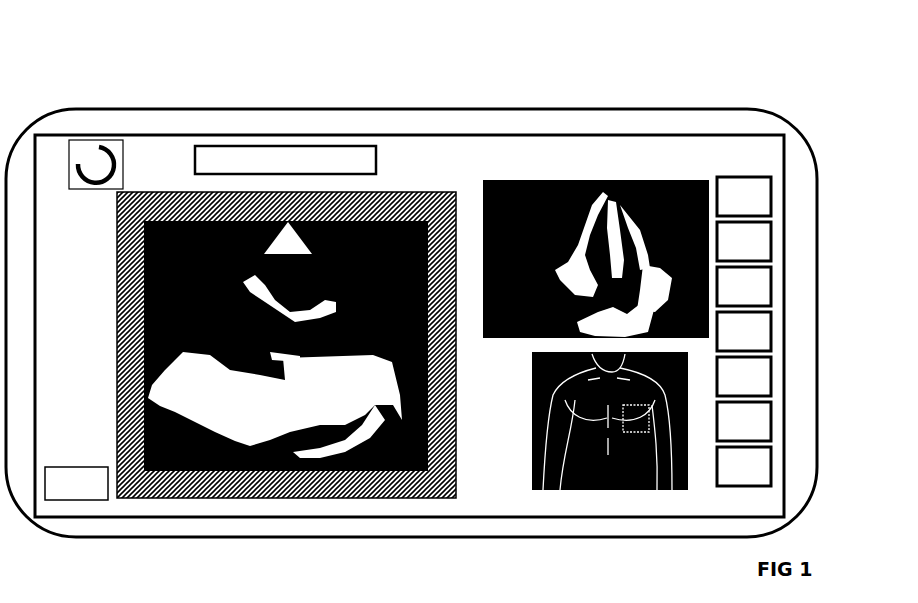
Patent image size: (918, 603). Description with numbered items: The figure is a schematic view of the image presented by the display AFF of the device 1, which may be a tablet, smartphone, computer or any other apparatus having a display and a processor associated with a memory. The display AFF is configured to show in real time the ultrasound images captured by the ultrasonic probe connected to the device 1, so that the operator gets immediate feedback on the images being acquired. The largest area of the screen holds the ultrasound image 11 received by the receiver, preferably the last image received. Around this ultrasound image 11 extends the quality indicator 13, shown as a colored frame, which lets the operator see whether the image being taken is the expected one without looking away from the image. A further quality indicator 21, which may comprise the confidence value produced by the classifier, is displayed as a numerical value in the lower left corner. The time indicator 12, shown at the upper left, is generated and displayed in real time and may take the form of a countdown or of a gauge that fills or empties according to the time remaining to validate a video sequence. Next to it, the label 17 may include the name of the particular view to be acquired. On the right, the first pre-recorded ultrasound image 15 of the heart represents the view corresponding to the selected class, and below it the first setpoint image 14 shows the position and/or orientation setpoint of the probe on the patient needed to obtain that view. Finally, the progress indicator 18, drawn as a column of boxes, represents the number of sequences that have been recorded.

The device 1 is at (160, 94).
The display AFF is at (511, 134).
The ultrasound image 11 is at (141, 335).
The time indicator 12 is at (102, 140).
The quality indicator 13 is at (411, 192).
The first setpoint image 14 is at (532, 422).
The first pre-recorded ultrasound image 15 is at (646, 180).
The label 17 is at (330, 146).
The progress indicator 18 is at (773, 198).
The quality indicator 21 is at (57, 467).